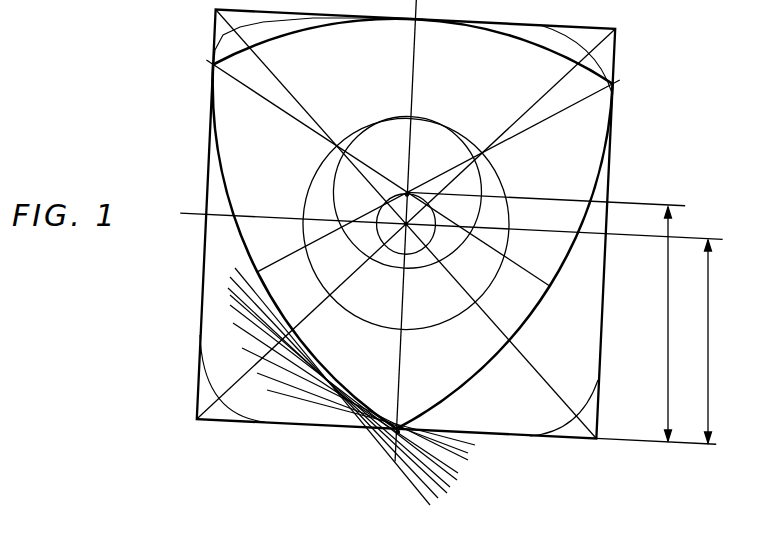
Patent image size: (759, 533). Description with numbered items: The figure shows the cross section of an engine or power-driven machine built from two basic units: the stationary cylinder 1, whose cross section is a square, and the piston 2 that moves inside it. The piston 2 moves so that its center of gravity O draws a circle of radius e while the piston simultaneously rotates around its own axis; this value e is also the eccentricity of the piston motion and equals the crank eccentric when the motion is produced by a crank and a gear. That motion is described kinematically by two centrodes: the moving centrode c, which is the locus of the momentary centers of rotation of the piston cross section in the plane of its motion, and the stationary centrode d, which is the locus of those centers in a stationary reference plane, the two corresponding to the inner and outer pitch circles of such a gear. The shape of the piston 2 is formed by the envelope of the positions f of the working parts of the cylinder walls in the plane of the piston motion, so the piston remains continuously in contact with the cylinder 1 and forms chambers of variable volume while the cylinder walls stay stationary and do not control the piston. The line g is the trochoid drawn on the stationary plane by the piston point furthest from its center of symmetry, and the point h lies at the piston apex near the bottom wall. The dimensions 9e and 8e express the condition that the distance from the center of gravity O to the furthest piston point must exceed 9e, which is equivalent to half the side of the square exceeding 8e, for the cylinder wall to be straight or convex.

The stationary cylinder 1 is at (604, 173).
The piston 2 is at (606, 124).
The center of gravity of the piston O is at (415, 183).
The radius of the circle drawn by the center of gravity e is at (406, 223).
The moving centrode c is at (333, 180).
The stationary centrode d is at (304, 205).
The positions of working parts of the cylinder walls f is at (243, 316).
The trochoid line g is at (199, 386).
The rotor apex point h is at (383, 431).
The minimum distance from center of gravity to furthest piston point 9e is at (663, 324).
The minimum half side length of the square cylinder cross section 8e is at (702, 341).